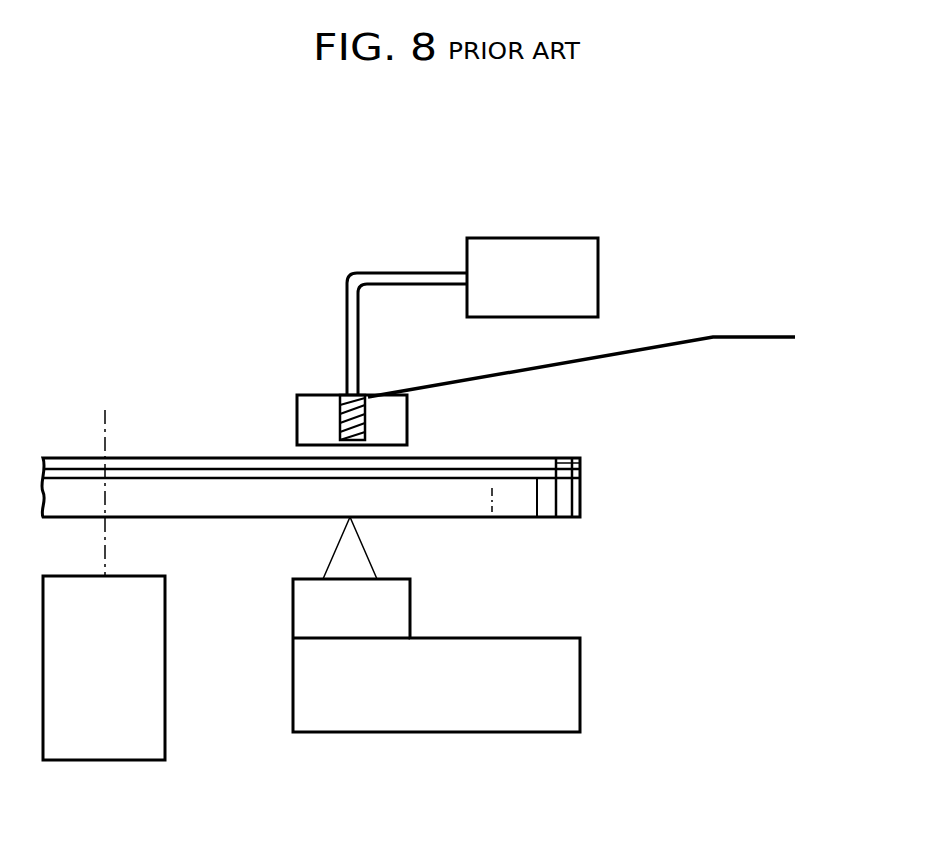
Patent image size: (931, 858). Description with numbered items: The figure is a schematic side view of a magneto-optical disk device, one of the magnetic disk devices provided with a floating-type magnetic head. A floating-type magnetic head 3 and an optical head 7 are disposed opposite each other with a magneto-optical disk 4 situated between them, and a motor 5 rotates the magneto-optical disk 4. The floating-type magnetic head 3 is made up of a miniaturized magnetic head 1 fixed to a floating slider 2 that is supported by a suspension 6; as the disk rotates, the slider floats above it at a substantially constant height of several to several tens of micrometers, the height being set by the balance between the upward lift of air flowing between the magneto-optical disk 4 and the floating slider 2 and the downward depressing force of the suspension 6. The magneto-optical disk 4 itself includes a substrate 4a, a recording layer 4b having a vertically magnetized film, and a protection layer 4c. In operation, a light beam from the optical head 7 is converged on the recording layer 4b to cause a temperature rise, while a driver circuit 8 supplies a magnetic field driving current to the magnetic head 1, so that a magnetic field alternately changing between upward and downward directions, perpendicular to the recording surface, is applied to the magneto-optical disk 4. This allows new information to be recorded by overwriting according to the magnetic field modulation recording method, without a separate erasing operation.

The magnetic head 1 is at (341, 428).
The floating slider 2 is at (304, 395).
The floating-type magnetic head 3 is at (327, 385).
The magneto-optical disk 4 is at (522, 522).
The substrate 4a is at (582, 512).
The recording layer 4b is at (581, 476).
The protection layer 4c is at (565, 458).
The motor 5 is at (138, 708).
The suspension 6 is at (685, 338).
The optical head 7 is at (395, 613).
The driver circuit 8 is at (558, 238).